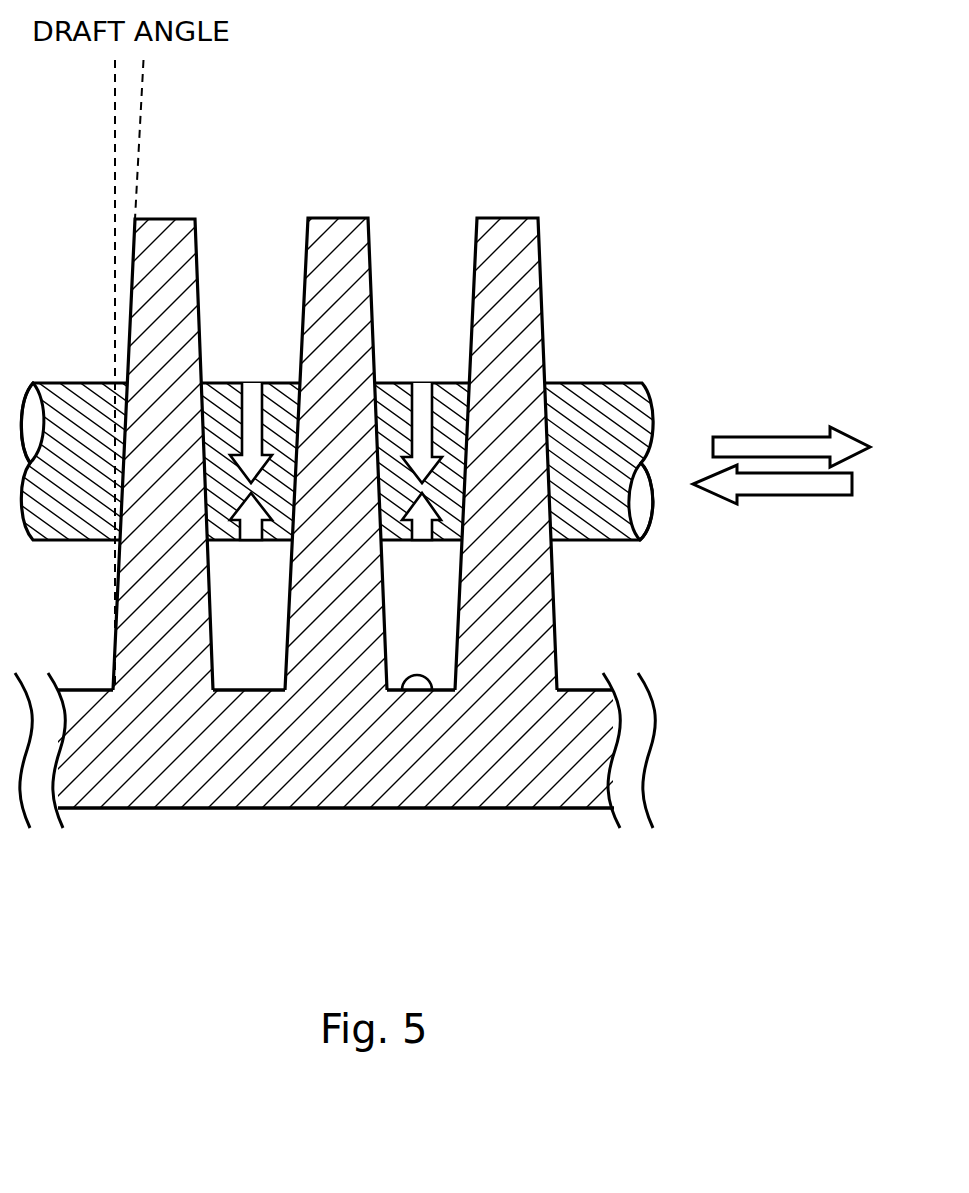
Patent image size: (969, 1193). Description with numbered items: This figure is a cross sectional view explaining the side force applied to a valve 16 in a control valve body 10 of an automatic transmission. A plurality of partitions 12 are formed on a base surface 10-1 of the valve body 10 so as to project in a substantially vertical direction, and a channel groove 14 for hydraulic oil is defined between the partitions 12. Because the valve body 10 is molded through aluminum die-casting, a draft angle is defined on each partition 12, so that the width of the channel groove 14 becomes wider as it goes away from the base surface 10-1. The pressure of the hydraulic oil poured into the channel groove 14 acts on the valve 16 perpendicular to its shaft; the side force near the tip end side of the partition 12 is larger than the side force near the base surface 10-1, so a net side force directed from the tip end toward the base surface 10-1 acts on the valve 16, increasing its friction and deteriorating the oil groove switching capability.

The valve body 10 is at (163, 777).
The base surface 10-1 is at (400, 691).
The partition 12 is at (165, 227).
The channel groove 14 is at (252, 273).
The valve 16 is at (635, 412).